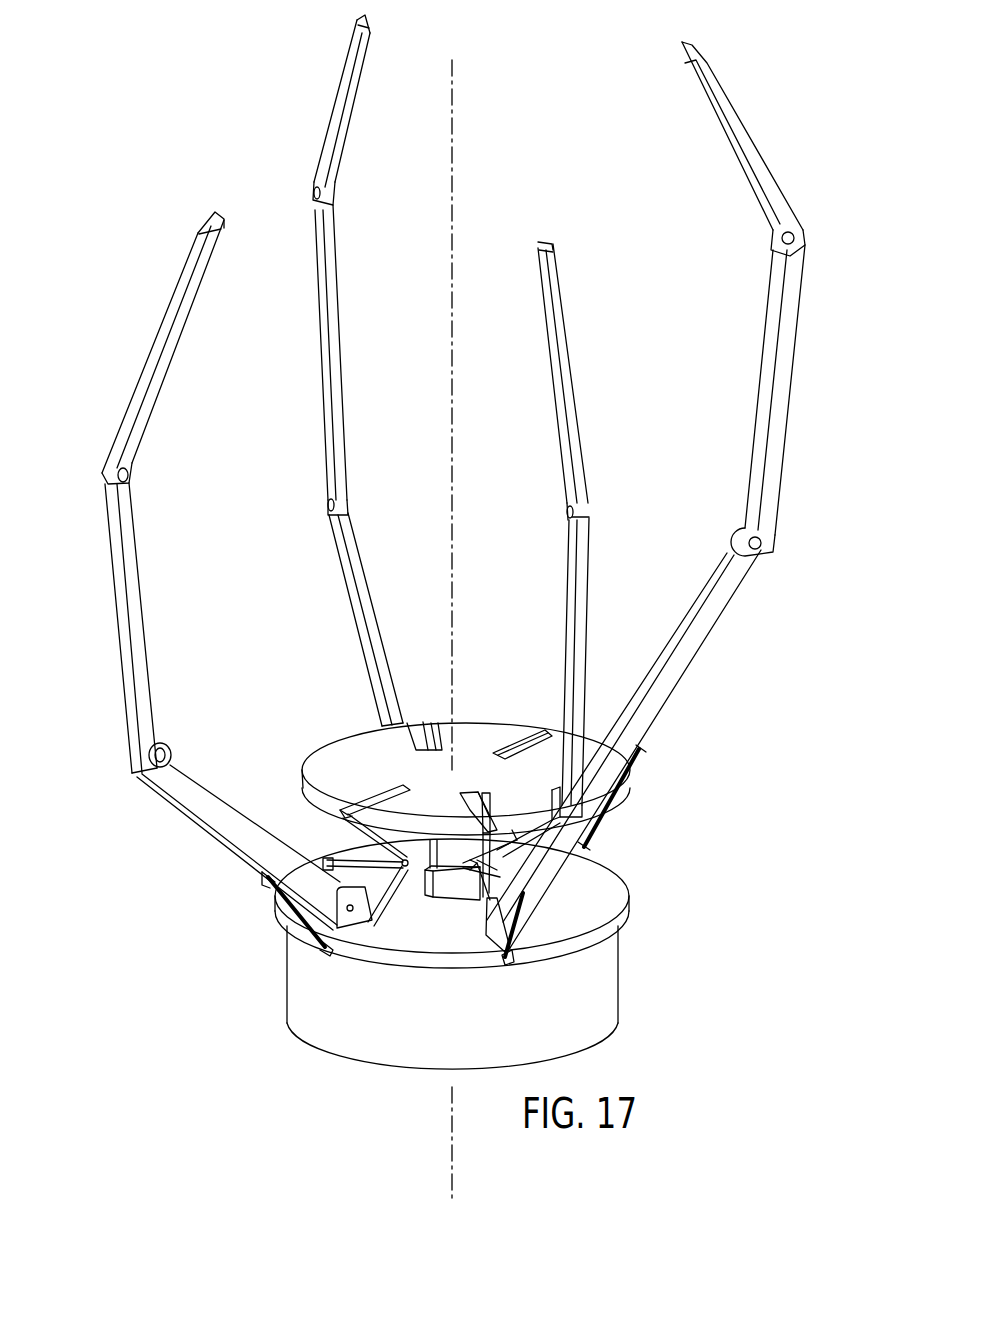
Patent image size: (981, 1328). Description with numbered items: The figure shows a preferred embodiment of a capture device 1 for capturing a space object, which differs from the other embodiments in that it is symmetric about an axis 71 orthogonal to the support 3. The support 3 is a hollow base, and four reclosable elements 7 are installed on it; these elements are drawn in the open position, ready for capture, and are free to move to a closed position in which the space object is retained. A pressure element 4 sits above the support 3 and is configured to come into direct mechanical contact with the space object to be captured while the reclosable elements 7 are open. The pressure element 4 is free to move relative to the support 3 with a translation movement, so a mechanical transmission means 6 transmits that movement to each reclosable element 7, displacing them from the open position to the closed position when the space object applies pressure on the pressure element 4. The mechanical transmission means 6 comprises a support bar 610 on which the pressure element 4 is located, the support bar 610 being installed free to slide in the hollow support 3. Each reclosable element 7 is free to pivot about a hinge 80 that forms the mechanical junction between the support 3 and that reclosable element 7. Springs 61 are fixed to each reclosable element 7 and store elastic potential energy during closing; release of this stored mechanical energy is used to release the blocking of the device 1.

The capture device 1 is at (478, 614).
The support 3 is at (585, 995).
The pressure element 4 is at (470, 735).
The mechanical transmission means 6 is at (447, 855).
The reclosable element 7 is at (88, 588).
The spring 61 is at (610, 820).
The axis 71 is at (452, 165).
The hinge 80 is at (348, 945).
The support bar 610 is at (455, 870).